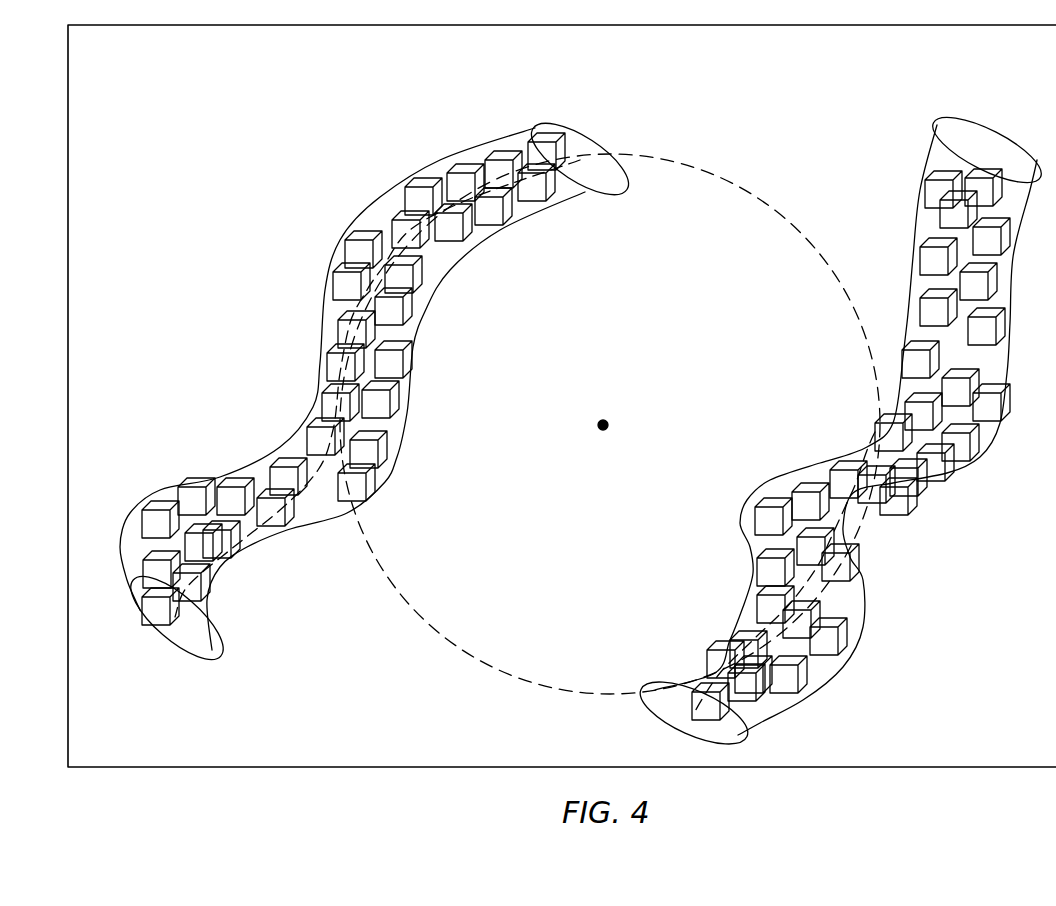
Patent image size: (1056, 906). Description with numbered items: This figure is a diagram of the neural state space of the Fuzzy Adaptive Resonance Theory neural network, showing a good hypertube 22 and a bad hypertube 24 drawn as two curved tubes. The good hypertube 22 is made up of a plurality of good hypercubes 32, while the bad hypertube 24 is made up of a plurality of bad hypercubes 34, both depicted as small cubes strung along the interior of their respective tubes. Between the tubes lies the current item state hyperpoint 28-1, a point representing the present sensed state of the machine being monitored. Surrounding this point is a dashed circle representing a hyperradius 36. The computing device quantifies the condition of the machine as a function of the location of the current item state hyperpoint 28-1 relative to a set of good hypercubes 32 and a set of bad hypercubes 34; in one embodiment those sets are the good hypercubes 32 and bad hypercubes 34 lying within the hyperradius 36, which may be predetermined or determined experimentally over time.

The good hypertube 22 is at (379, 386).
The bad hypertube 24 is at (844, 430).
The hyperradius 36 is at (737, 183).
The current item state hyperpoint 28-1 is at (606, 424).
The good hypercubes 32 is at (330, 515).
The bad hypercubes 34 is at (970, 497).